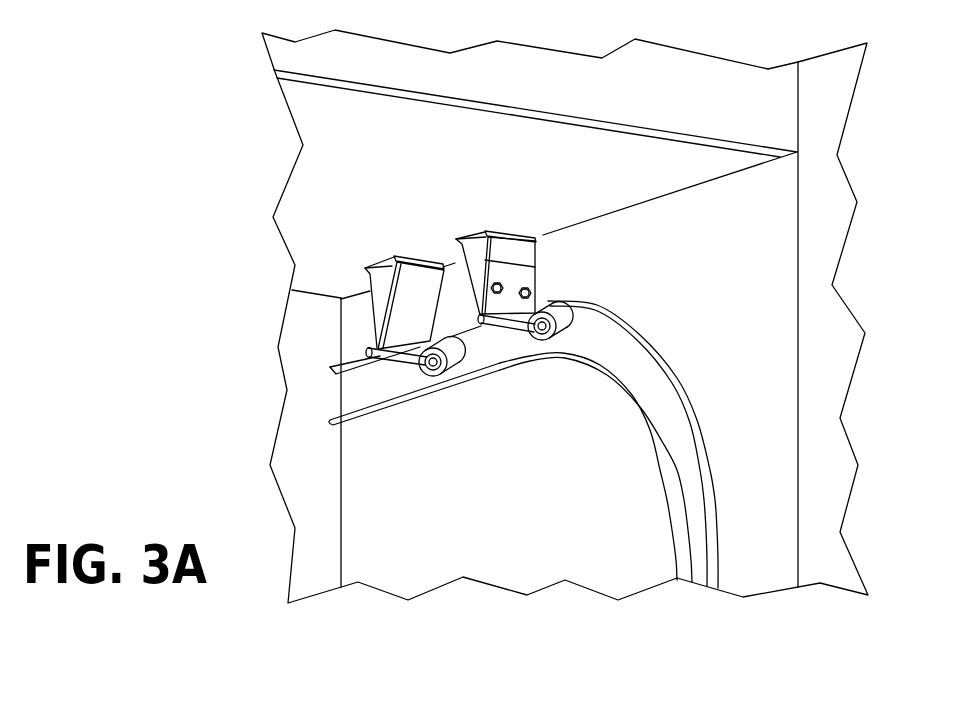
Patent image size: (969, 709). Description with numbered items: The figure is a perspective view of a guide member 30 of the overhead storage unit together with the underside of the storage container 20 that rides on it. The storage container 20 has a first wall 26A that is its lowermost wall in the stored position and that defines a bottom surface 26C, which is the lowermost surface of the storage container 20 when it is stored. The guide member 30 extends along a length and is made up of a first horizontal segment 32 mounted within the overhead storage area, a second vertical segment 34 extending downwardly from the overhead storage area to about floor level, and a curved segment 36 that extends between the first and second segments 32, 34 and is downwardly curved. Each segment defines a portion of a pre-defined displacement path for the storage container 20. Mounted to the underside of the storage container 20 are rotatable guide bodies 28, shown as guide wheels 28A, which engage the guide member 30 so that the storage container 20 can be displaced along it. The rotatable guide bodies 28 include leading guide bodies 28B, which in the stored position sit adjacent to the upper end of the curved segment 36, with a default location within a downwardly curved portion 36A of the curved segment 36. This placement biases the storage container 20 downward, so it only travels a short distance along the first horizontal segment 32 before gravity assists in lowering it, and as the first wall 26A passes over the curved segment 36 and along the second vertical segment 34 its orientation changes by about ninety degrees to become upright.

The storage container 20 is at (658, 163).
The first wall 26A is at (445, 170).
The bottom surface 26C is at (390, 184).
The rotatable guide bodies 28 is at (440, 352).
The guide wheels 28A is at (445, 371).
The leading guide bodies 28B is at (557, 320).
The guide member 30 is at (552, 474).
The first horizontal segment 32 is at (357, 418).
The second vertical segment 34 is at (698, 559).
The curved segment 36 is at (683, 403).
The downwardly curved portion 36A is at (648, 434).